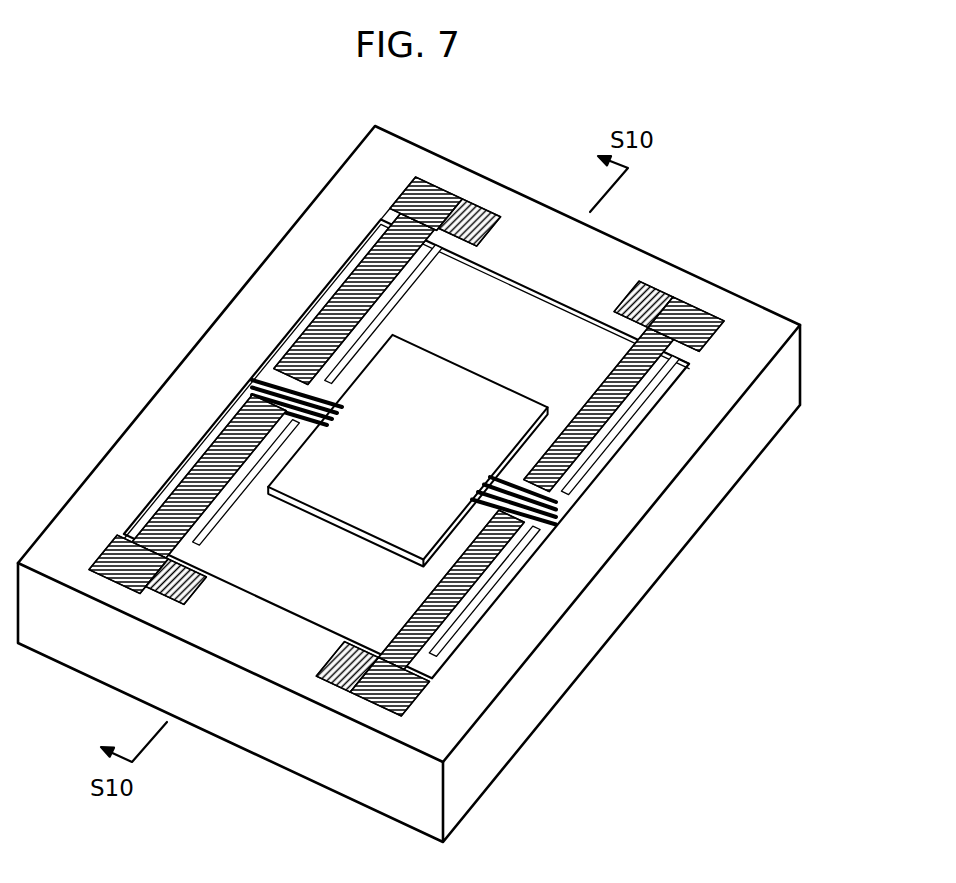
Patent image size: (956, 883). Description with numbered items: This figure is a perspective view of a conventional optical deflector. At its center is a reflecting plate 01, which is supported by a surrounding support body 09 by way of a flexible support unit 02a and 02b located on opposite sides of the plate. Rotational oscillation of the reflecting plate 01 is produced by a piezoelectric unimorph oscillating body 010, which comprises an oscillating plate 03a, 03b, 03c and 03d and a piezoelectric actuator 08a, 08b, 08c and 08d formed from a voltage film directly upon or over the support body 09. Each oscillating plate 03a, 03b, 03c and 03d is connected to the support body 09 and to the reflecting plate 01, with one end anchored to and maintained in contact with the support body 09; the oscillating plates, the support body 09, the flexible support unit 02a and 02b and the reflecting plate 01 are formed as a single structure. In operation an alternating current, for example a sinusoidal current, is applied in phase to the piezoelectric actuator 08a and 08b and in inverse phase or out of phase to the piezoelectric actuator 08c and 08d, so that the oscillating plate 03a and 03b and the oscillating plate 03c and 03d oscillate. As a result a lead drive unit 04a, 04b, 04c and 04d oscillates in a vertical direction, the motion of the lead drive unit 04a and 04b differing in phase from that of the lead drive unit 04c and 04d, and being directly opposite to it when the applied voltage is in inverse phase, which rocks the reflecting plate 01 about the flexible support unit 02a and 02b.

The reflecting plate 01 is at (463, 363).
The flexible support unit 02a is at (277, 385).
The flexible support unit 02b is at (490, 512).
The oscillating plate 03a is at (370, 255).
The oscillating plate 03b is at (637, 420).
The oscillating plate 03c is at (187, 472).
The oscillating plate 03d is at (515, 653).
The lead drive unit 04a is at (340, 387).
The lead drive unit 04b is at (562, 512).
The lead drive unit 04c is at (293, 420).
The lead drive unit 04d is at (487, 602).
The piezoelectric actuator 08a is at (441, 192).
The piezoelectric actuator 08b is at (700, 310).
The piezoelectric actuator 08c is at (120, 578).
The piezoelectric actuator 08d is at (407, 683).
The support body 09 is at (560, 685).
The piezoelectric unimorph oscillating body 010 is at (378, 233).